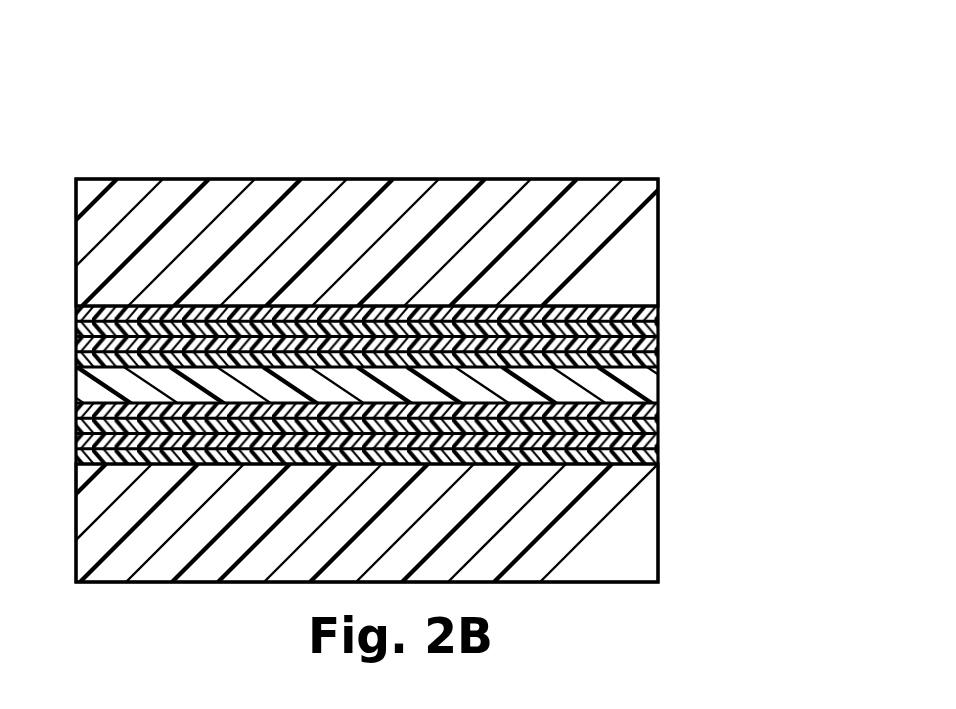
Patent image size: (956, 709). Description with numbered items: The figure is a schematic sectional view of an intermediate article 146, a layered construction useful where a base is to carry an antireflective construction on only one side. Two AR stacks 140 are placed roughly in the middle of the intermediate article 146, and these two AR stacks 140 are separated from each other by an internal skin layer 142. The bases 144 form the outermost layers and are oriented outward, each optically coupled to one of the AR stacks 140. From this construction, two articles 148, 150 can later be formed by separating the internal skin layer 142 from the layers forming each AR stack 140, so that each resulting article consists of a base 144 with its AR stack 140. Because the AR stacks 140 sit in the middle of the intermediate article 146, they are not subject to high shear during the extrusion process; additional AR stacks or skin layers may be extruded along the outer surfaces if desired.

The AR stack 140 is at (666, 306).
The internal skin layer 142 is at (640, 380).
The base 144 is at (643, 230).
The intermediate article 146 is at (568, 144).
The article 148 is at (742, 179).
The article 150 is at (742, 403).